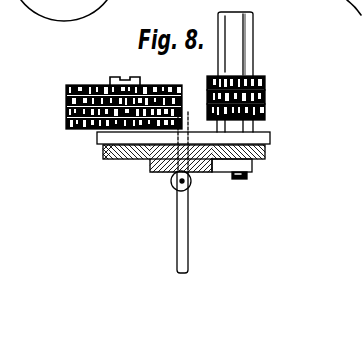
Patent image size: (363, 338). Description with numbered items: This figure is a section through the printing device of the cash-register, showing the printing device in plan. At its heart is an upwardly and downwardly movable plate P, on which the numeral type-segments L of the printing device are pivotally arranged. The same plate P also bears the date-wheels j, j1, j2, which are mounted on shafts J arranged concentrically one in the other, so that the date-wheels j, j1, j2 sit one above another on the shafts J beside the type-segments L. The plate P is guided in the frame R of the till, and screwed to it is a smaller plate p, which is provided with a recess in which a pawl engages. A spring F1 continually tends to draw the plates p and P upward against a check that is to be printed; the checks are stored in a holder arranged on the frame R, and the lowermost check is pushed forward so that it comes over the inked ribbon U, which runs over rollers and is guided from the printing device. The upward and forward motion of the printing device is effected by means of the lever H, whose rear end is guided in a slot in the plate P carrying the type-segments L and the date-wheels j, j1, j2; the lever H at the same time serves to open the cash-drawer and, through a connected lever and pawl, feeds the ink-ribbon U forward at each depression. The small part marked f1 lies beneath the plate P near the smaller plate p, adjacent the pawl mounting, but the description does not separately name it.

The numeral type-segment L is at (90, 81).
The shaft J is at (240, 47).
The date-wheel j is at (262, 80).
The date-wheel j1 is at (266, 98).
The date-wheel j2 is at (266, 117).
The inked ribbon U is at (270, 111).
The plate P is at (272, 139).
The frame R is at (266, 157).
The smaller plate p is at (153, 172).
The spring F1 is at (194, 156).
The nut f1 is at (245, 163).
The lever H is at (186, 241).